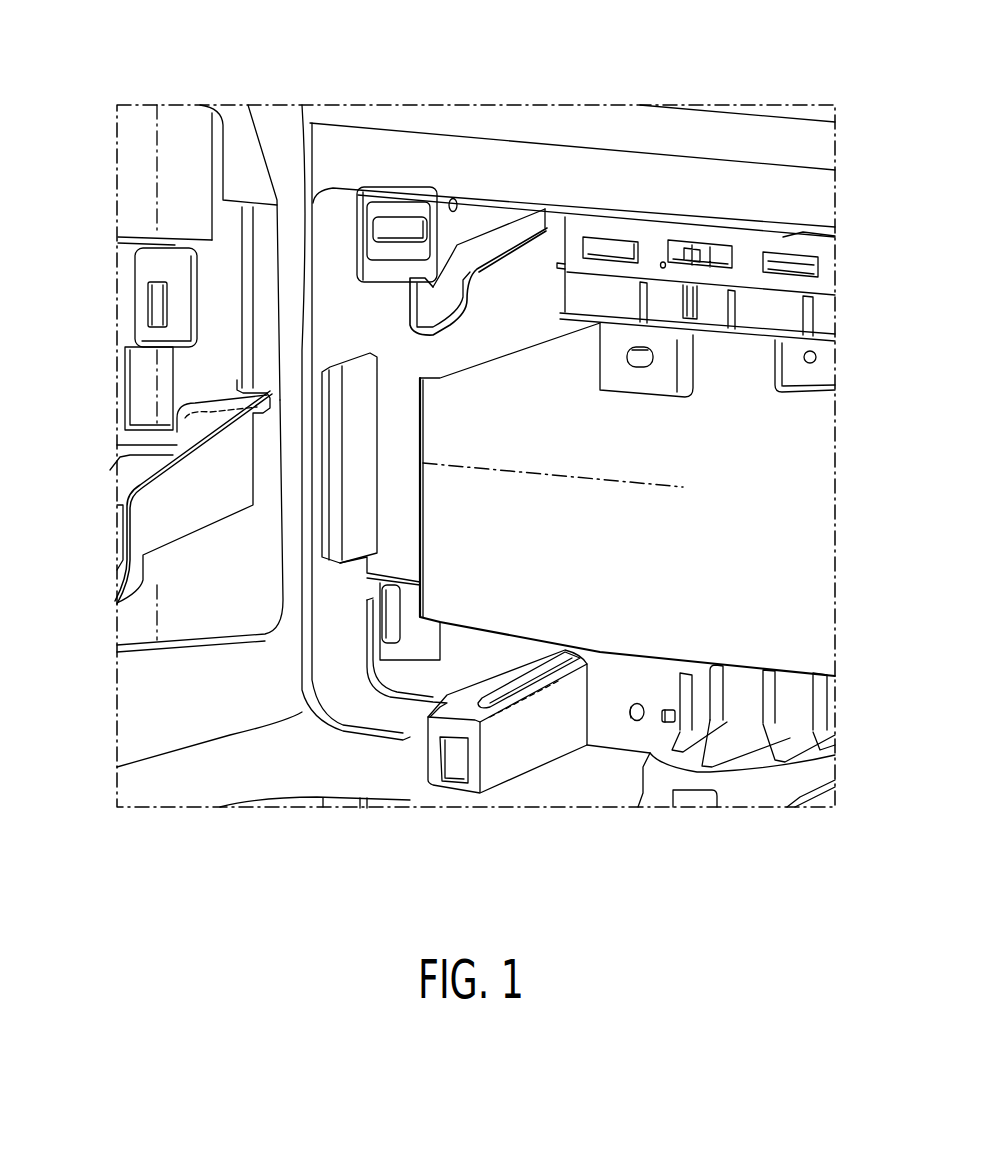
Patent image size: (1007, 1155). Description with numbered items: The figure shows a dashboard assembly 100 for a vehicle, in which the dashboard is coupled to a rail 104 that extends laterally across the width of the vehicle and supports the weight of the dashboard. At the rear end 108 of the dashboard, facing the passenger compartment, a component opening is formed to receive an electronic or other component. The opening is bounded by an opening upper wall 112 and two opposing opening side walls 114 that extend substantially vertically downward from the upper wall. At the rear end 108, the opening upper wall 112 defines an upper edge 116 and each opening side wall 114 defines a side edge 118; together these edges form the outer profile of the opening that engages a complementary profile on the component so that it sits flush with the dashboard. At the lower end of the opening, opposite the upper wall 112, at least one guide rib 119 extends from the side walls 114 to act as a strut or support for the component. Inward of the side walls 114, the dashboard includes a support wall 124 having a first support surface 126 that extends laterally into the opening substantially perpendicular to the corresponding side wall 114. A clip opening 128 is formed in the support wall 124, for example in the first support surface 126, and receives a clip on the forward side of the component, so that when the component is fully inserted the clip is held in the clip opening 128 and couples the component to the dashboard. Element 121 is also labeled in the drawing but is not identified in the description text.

The dashboard assembly 100 is at (742, 60).
The rail 104 is at (120, 272).
The rear end 108 is at (231, 782).
The opening upper wall 112 is at (486, 204).
The opening side walls 114 is at (317, 363).
The upper edge 116 is at (613, 204).
The side edge 118 is at (290, 482).
The guide rib 119 is at (537, 668).
The cross-car beam 121 is at (575, 126).
The support wall 124 is at (423, 484).
The first support surface 126 is at (402, 440).
The clip opening 128 is at (402, 222).